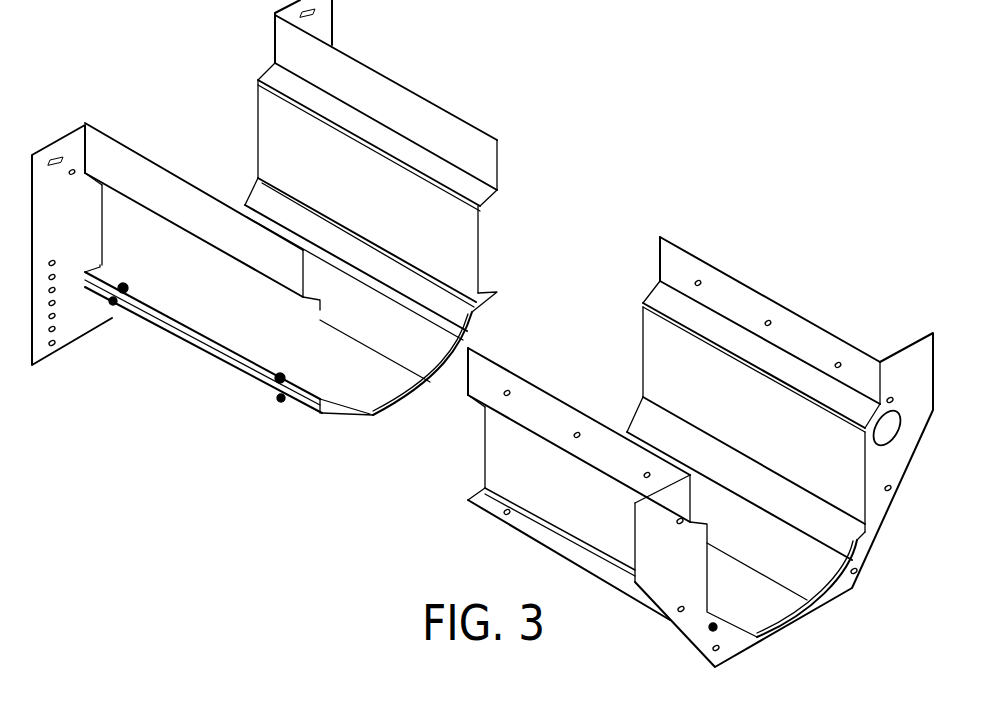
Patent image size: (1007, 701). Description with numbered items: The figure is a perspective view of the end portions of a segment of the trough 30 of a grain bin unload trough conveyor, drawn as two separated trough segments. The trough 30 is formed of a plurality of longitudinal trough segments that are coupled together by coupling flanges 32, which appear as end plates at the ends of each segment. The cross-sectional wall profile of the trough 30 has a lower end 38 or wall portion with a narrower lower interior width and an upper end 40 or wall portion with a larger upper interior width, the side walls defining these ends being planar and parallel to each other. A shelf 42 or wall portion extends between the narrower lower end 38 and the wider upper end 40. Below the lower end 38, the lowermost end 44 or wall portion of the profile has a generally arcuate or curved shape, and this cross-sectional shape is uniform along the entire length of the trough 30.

The trough 30 is at (712, 160).
The coupling flange 32 is at (70, 322).
The lower end 38 is at (277, 140).
The upper end 40 is at (129, 178).
The shelf 42 is at (278, 77).
The lowermost end 44 is at (377, 392).